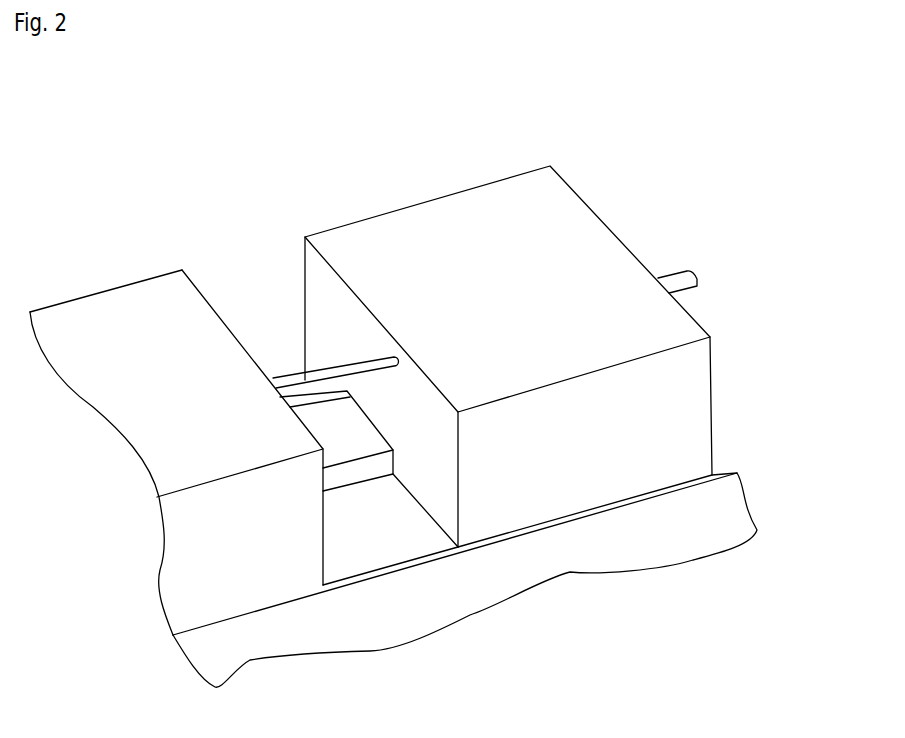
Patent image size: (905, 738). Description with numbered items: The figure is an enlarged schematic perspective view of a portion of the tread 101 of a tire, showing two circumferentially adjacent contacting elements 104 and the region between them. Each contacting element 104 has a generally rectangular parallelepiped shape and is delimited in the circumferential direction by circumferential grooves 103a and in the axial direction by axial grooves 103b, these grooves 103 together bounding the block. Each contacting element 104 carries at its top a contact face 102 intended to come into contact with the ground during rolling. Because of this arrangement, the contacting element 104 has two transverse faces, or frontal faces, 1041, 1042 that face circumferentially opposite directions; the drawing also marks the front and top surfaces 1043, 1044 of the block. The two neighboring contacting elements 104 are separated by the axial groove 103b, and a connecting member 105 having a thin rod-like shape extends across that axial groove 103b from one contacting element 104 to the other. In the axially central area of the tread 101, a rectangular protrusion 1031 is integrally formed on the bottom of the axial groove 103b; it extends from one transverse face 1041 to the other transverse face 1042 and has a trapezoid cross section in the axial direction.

The tread 101 is at (293, 187).
The contact face 102 is at (151, 353).
The groove 103 is at (275, 362).
The circumferential groove 103a is at (484, 356).
The axial groove 103b is at (405, 636).
The contacting element 104 is at (48, 303).
The connecting member 105 is at (297, 368).
The rectangular protrusion 1031 is at (332, 415).
The transverse face 1041 is at (427, 467).
The transverse face 1042 is at (327, 503).
The front wall of housing 1043 is at (590, 452).
The top wall of housing 1044 is at (523, 168).